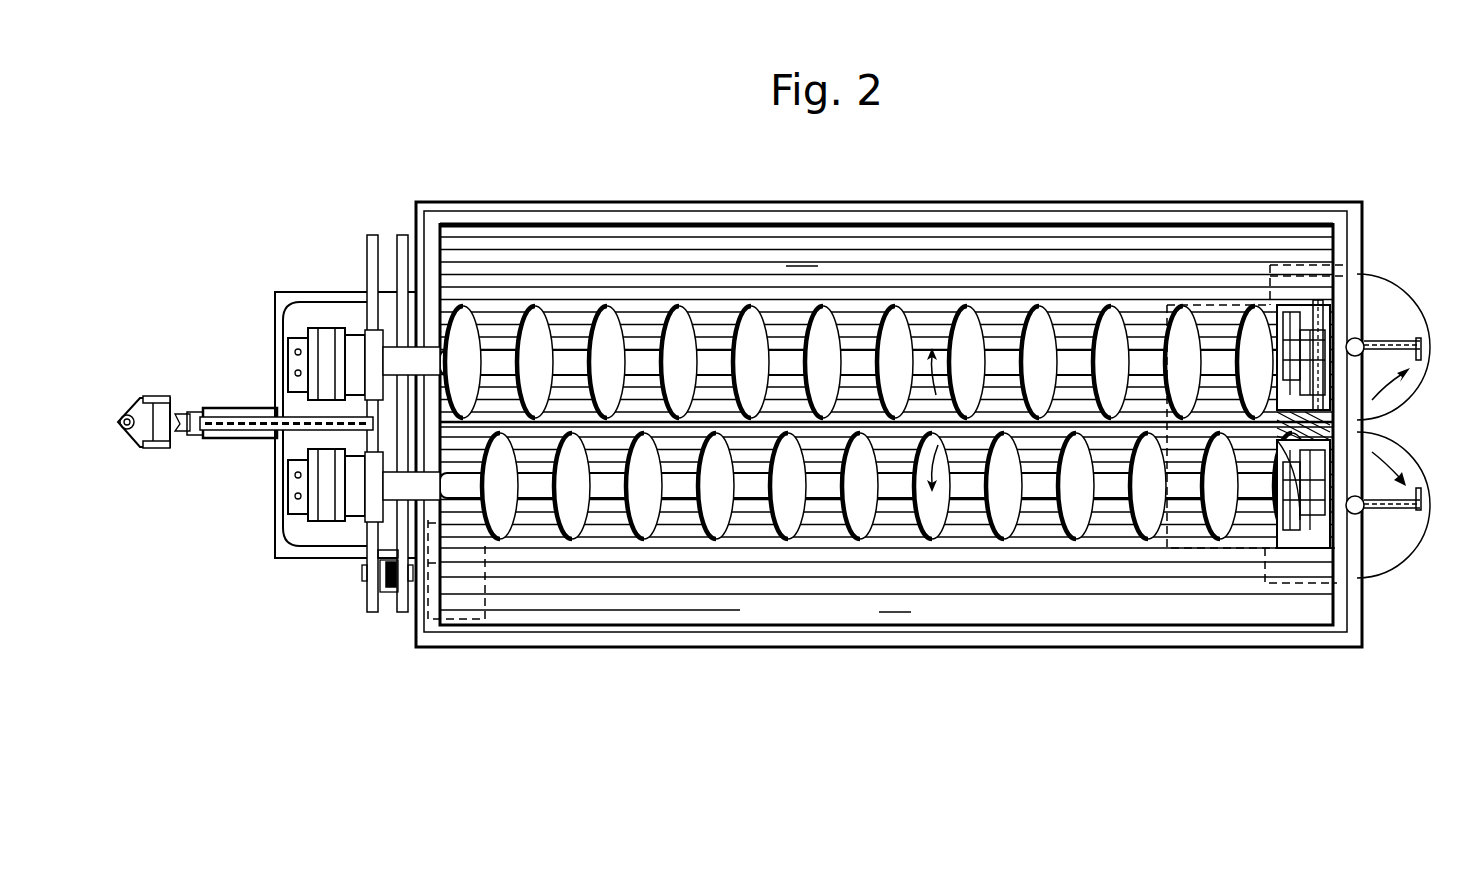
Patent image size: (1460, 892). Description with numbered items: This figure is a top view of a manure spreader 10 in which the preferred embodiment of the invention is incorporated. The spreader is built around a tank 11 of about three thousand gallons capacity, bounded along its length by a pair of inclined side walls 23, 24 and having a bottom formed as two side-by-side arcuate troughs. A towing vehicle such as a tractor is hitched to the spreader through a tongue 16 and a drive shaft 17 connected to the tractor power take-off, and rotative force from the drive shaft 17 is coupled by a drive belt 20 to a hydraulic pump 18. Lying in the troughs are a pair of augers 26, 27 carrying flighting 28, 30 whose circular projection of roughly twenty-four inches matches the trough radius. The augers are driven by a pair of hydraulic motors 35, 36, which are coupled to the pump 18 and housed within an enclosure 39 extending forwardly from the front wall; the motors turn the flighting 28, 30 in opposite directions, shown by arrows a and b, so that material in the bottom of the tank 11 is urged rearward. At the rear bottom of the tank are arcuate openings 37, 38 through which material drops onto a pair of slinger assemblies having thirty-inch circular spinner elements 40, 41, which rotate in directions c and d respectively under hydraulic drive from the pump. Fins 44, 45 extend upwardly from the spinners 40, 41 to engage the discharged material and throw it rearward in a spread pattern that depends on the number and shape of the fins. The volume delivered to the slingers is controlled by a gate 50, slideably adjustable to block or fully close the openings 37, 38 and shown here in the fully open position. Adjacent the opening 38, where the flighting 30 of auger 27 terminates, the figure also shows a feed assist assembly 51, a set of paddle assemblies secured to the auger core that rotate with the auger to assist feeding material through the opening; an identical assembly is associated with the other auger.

The manure spreader 10 is at (400, 100).
The tank 11 is at (588, 198).
The tongue 16 is at (155, 388).
The drive shaft 17 is at (238, 415).
The hydraulic pump 18 is at (485, 582).
The drive belt 20 is at (393, 590).
The inclined side wall 23 is at (895, 599).
The inclined side wall 24 is at (802, 253).
The auger 26 is at (875, 573).
The auger 27 is at (865, 278).
The flighting 28 is at (1108, 528).
The flighting 30 is at (1048, 303).
The hydraulic motor 35 is at (329, 534).
The hydraulic motor 36 is at (322, 314).
The arcuate opening 37 is at (1302, 548).
The arcuate opening 38 is at (1300, 322).
The enclosure 39 is at (338, 290).
The spinner element 40 is at (1378, 550).
The spinner element 41 is at (1370, 300).
The material engaging fins 44 is at (1372, 548).
The material engaging fins 45 is at (1393, 340).
The gate 50 is at (1240, 560).
The feed assist assembly 51 is at (1318, 300).
The rotation direction arrow a is at (937, 470).
The rotation direction arrow b is at (936, 368).
The rotation direction c is at (1404, 452).
The rotation direction d is at (1392, 400).